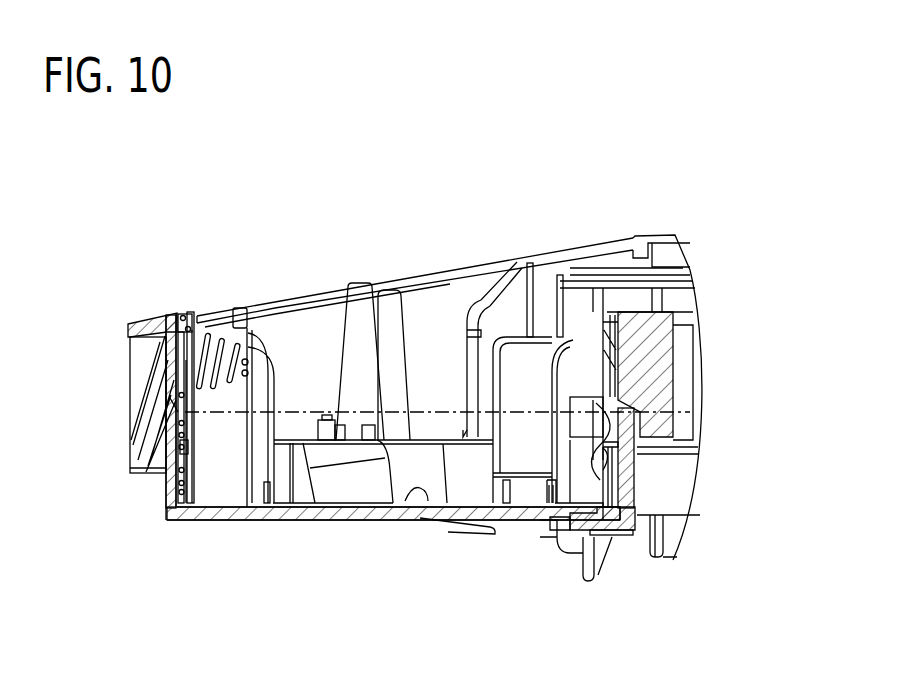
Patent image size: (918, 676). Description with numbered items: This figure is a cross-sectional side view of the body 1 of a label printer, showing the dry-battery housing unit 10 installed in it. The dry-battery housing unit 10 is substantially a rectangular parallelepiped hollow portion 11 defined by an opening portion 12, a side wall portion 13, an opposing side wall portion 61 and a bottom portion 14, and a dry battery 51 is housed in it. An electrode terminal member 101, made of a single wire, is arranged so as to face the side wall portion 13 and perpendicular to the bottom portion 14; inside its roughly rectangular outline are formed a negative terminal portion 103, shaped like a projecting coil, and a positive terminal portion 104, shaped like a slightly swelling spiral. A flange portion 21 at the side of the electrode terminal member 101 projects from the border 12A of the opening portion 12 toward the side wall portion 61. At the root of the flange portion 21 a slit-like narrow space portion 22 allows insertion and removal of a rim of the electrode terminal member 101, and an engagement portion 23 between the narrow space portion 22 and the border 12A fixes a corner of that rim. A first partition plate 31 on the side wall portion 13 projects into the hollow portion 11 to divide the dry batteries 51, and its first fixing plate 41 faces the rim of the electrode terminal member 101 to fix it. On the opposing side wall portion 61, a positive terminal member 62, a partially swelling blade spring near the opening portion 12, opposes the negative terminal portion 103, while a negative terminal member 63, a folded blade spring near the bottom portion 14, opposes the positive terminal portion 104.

The body 1 is at (680, 246).
The dry-battery housing unit 10 is at (288, 174).
The hollow portion 11 is at (450, 383).
The opening portion 12 is at (512, 286).
The border 12A is at (176, 321).
The side wall portion 13 is at (177, 412).
The bottom portion 14 is at (415, 490).
The flange portion 21 is at (221, 303).
The narrow space portion 22 is at (197, 308).
The engagement portion 23 is at (180, 315).
The first partition plate 31 is at (233, 483).
The first fixing plate 41 is at (192, 466).
The dry battery 51 is at (406, 290).
The side wall portion 61 is at (600, 392).
The positive terminal member 62 is at (600, 348).
The negative terminal member 63 is at (617, 494).
The electrode terminal member 101 is at (175, 405).
The negative terminal portion 103 is at (250, 366).
The positive terminal portion 104 is at (185, 448).